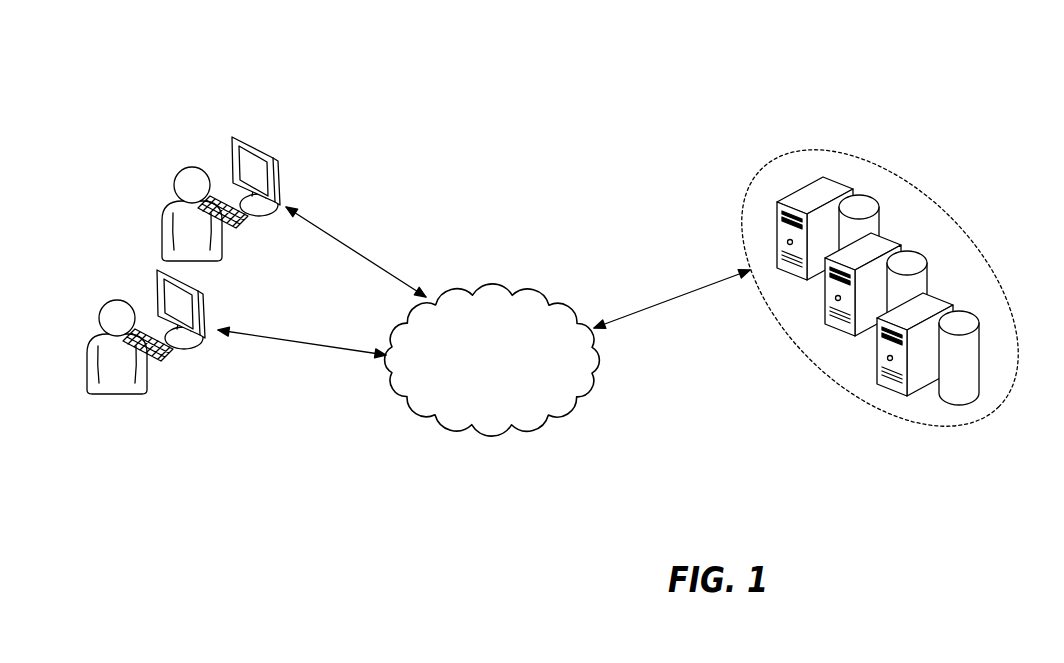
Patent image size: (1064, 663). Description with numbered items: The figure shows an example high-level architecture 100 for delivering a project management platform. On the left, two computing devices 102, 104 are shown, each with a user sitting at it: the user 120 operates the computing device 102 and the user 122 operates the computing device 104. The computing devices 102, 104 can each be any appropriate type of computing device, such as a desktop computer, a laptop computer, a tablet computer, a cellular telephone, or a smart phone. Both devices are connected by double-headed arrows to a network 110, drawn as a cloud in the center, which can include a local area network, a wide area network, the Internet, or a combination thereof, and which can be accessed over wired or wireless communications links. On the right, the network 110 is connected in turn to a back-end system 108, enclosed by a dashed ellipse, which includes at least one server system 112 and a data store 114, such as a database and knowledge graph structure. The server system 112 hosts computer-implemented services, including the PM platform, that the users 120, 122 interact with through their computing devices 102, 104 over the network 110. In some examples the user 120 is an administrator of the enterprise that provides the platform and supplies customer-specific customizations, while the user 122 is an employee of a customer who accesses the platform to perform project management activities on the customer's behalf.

The high-level architecture 100 is at (772, 58).
The computing device 102 is at (281, 174).
The computing device 104 is at (210, 306).
The back-end system 108 is at (877, 287).
The network 110 is at (491, 290).
The server system 112 is at (807, 186).
The data store 114 is at (859, 195).
The user 120 is at (184, 170).
The user 122 is at (109, 303).